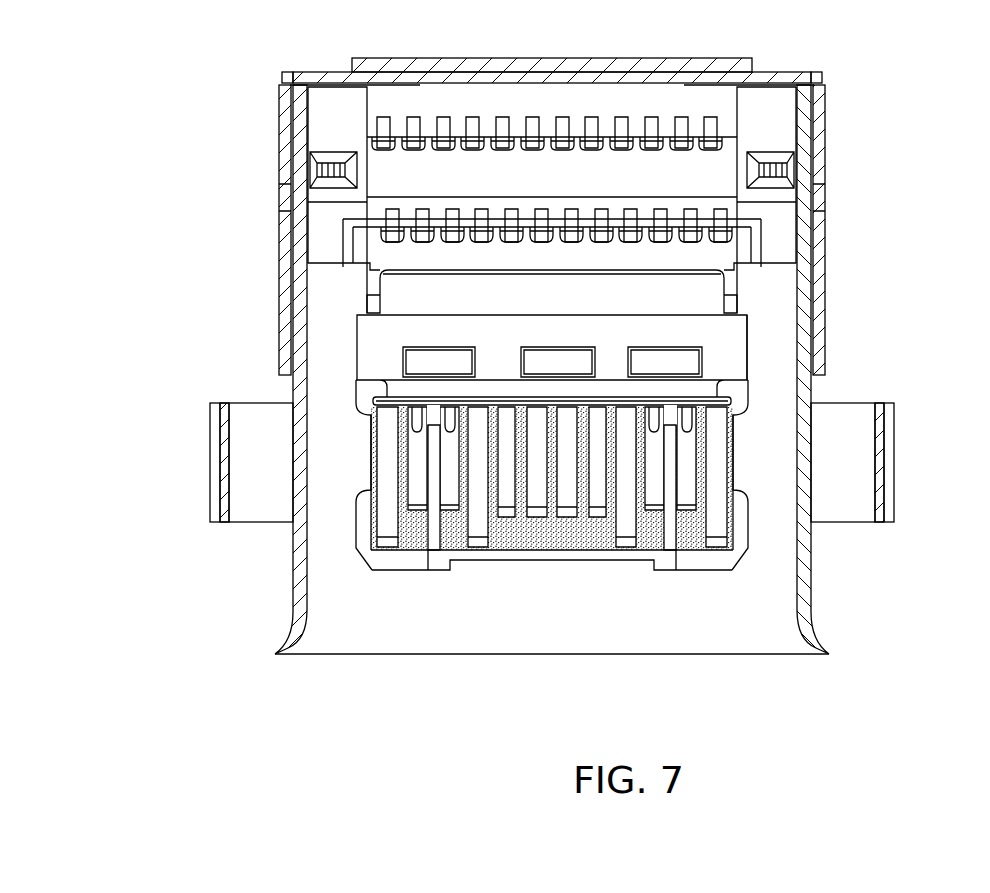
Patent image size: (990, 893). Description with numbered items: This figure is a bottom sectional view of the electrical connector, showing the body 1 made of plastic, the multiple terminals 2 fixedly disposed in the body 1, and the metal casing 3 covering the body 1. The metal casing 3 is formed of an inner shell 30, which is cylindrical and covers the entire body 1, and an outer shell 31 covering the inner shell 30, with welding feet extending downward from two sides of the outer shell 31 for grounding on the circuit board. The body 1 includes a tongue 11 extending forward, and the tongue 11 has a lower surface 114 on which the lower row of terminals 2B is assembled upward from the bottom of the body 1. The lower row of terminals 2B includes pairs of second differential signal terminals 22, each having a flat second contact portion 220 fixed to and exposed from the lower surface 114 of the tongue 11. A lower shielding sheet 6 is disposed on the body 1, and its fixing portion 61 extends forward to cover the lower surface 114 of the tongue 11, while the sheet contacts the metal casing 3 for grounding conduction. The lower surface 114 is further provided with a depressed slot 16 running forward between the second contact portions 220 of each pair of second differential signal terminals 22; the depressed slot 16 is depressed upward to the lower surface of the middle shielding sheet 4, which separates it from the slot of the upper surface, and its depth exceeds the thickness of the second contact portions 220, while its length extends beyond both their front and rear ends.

The body 1 is at (320, 230).
The terminals 2 is at (388, 528).
The lower row of terminals 2B is at (730, 528).
The metal casing 3 is at (322, 62).
The inner shell 30 is at (302, 144).
The outer shell 31 is at (283, 108).
The middle shielding sheet 4 is at (365, 395).
The lower shielding sheet 6 is at (355, 343).
The fixing portion 61 is at (730, 352).
The tongue 11 is at (558, 557).
The lower surface 114 is at (512, 545).
The depressed slot 16 is at (670, 540).
The second differential signal terminals 22 is at (684, 497).
The second contact portion 220 is at (683, 470).